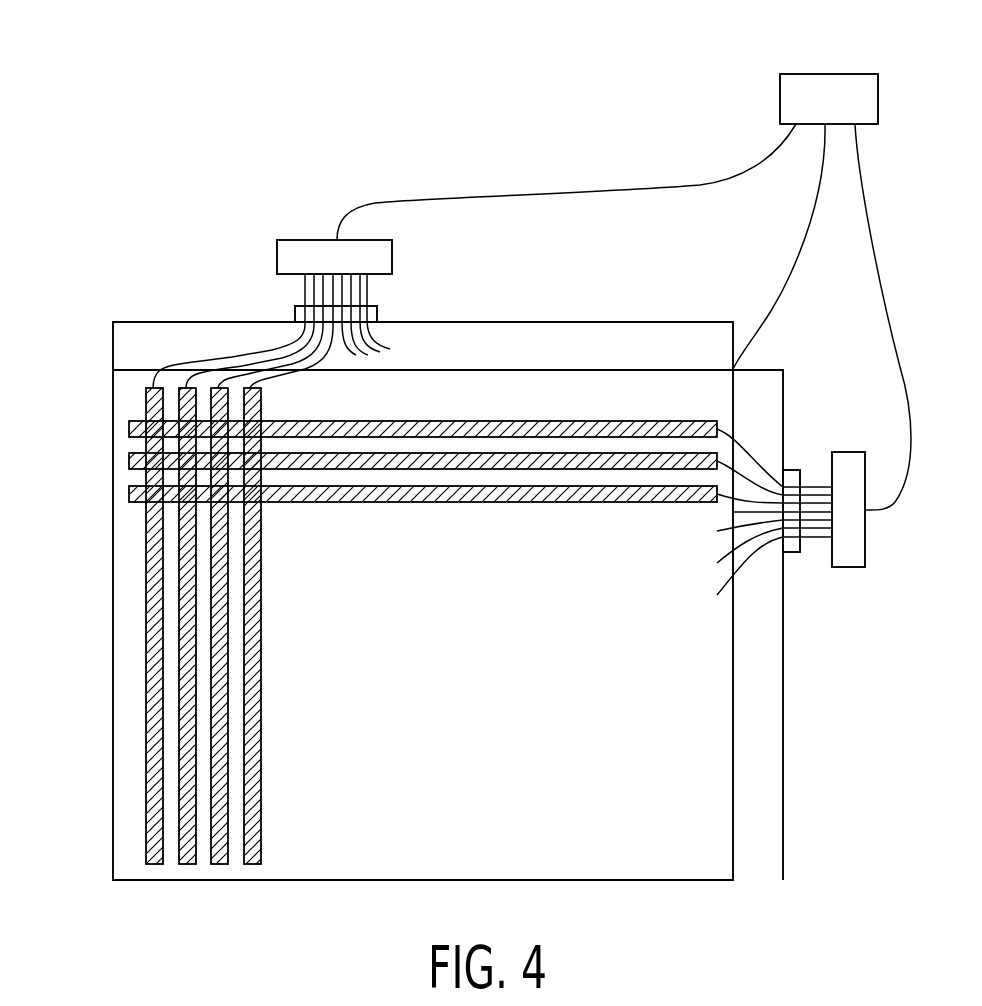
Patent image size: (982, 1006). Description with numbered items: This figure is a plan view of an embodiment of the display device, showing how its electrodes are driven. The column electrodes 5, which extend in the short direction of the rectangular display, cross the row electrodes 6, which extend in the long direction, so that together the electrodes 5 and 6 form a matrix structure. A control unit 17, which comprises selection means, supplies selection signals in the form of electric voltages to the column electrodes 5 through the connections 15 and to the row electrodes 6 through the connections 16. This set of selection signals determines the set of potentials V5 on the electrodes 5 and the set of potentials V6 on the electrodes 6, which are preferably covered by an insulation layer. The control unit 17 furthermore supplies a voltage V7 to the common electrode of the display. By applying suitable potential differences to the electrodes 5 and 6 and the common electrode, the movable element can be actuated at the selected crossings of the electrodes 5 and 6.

The column electrodes 5 is at (158, 821).
The row electrodes 6 is at (567, 420).
The connections 15 is at (303, 292).
The connections 16 is at (817, 543).
The control unit 17 is at (820, 82).
The potentials on the column electrodes V5 is at (213, 353).
The potentials on the row electrodes V6 is at (748, 567).
The voltage to the common electrode V7 is at (782, 246).